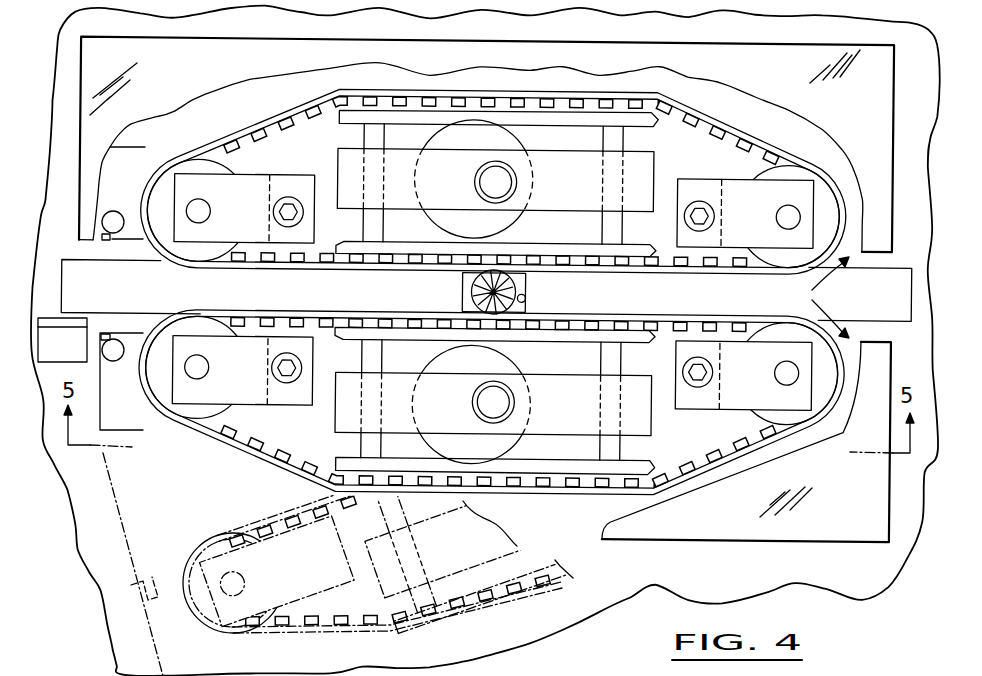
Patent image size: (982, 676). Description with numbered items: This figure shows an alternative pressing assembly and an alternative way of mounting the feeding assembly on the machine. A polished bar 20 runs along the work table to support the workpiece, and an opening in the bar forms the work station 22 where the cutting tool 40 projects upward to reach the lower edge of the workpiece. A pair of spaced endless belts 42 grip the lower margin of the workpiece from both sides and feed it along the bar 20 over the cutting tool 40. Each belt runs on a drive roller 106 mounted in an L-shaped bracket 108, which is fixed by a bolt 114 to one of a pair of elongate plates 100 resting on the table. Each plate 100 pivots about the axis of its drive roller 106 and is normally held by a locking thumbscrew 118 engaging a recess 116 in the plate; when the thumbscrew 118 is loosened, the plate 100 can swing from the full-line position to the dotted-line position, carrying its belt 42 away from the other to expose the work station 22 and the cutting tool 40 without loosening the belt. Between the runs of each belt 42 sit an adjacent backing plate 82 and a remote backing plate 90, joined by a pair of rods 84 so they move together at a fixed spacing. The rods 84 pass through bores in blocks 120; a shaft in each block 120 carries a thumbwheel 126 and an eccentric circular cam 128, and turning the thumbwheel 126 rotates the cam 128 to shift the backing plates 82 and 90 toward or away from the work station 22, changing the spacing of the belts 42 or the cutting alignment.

The bar 20 is at (292, 299).
The work station 22 is at (525, 296).
The cutting tool 40 is at (462, 289).
The endless belts 42 is at (263, 122).
The adjacent backing plates 82 is at (580, 244).
The rods 84 is at (361, 222).
The remote backing plates 90 is at (550, 112).
The elongate plates 100 is at (142, 147).
The drive roller 106 is at (792, 177).
The L-shaped bracket 108 is at (258, 204).
The bolt 114 is at (700, 352).
The recess 116 is at (117, 341).
The locking thumbscrew 118 is at (104, 334).
The blocks 120 is at (587, 190).
The thumbwheel 126 is at (474, 183).
The cam 128 is at (514, 141).